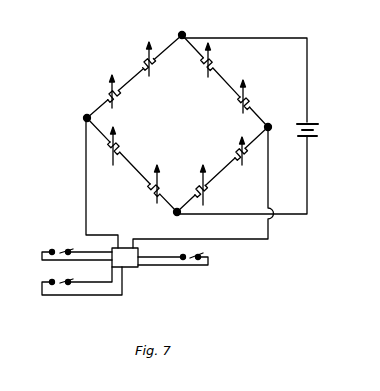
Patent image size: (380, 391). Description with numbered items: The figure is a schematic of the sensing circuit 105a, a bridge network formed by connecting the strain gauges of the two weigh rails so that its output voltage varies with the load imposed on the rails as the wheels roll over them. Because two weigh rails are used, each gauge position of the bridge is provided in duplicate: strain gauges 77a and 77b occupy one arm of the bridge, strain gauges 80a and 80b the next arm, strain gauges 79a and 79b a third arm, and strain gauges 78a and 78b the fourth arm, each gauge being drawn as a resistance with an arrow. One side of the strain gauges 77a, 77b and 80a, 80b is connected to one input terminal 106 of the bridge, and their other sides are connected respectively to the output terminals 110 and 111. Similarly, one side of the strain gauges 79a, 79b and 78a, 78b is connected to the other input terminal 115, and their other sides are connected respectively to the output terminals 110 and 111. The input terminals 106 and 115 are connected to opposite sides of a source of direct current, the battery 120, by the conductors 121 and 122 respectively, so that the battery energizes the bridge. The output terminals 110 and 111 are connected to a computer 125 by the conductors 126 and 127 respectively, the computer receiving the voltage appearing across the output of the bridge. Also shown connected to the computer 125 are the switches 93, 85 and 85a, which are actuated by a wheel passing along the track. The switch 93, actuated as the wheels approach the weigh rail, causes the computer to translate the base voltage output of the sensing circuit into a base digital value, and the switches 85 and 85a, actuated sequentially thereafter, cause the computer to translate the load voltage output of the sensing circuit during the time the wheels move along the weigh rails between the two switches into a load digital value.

The sensing circuit 105a is at (105, 43).
The input terminal 106 is at (181, 31).
The output terminal 110 is at (83, 118).
The output terminal 111 is at (269, 124).
The input terminal 115 is at (175, 214).
The strain gauge 77a is at (108, 99).
The strain gauge 77b is at (143, 65).
The strain gauge 78a is at (205, 189).
The strain gauge 78b is at (237, 158).
The strain gauge 79a is at (118, 148).
The strain gauge 79b is at (160, 188).
The strain gauge 80a is at (204, 62).
The strain gauge 80b is at (240, 102).
The battery 120 is at (318, 132).
The conductor 121 is at (240, 38).
The conductor 122 is at (292, 220).
The computer 125 is at (128, 240).
The conductor 126 is at (85, 191).
The conductor 127 is at (268, 241).
The switch 85 is at (63, 250).
The switch 85a is at (193, 255).
The switch 93 is at (52, 279).